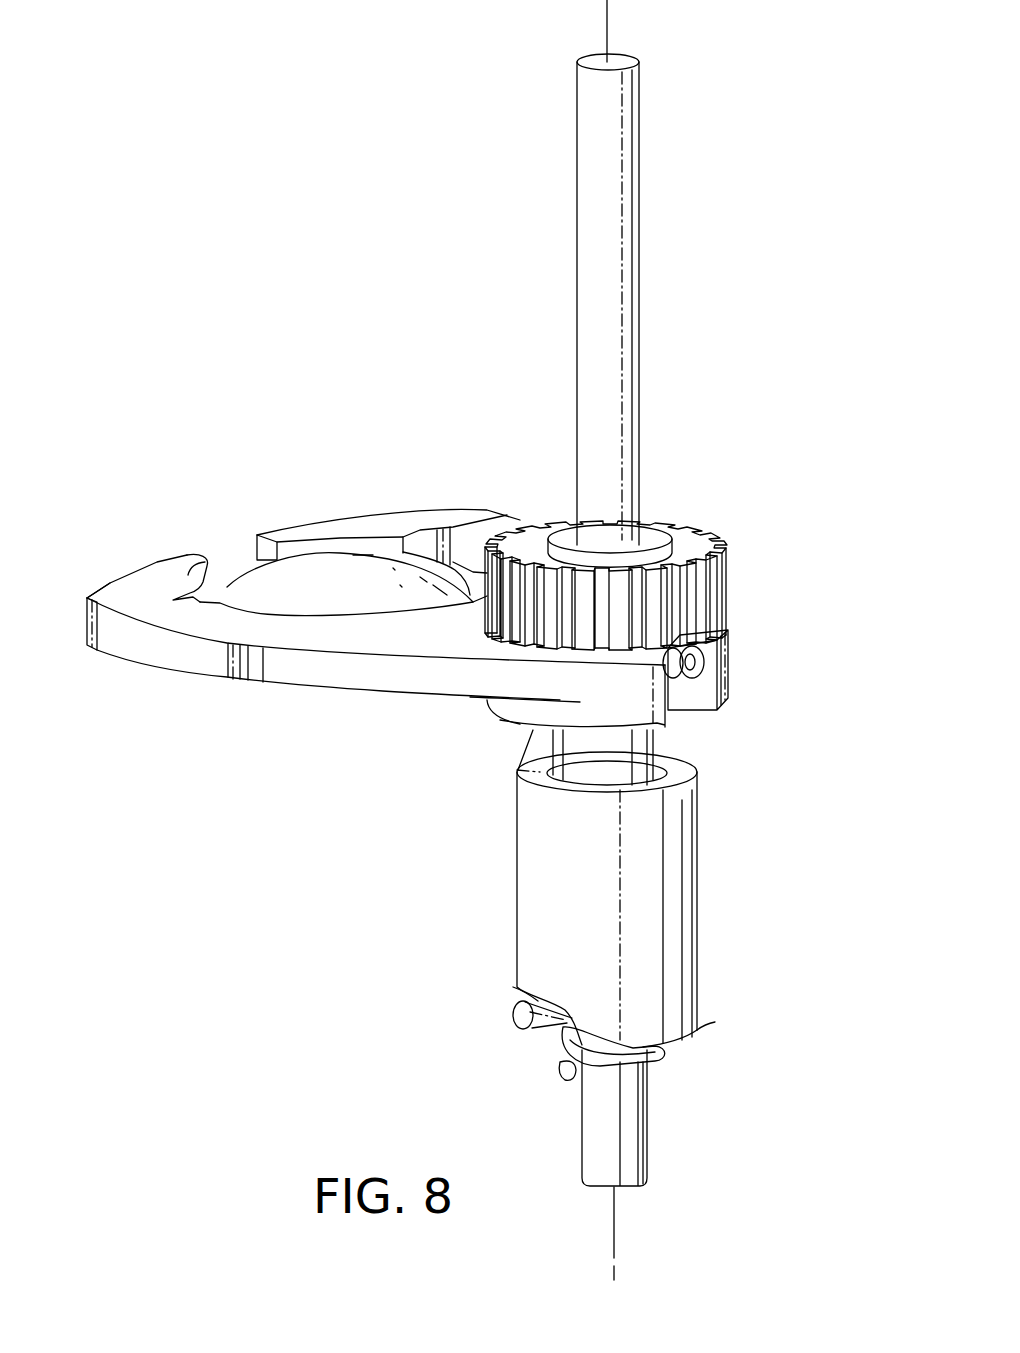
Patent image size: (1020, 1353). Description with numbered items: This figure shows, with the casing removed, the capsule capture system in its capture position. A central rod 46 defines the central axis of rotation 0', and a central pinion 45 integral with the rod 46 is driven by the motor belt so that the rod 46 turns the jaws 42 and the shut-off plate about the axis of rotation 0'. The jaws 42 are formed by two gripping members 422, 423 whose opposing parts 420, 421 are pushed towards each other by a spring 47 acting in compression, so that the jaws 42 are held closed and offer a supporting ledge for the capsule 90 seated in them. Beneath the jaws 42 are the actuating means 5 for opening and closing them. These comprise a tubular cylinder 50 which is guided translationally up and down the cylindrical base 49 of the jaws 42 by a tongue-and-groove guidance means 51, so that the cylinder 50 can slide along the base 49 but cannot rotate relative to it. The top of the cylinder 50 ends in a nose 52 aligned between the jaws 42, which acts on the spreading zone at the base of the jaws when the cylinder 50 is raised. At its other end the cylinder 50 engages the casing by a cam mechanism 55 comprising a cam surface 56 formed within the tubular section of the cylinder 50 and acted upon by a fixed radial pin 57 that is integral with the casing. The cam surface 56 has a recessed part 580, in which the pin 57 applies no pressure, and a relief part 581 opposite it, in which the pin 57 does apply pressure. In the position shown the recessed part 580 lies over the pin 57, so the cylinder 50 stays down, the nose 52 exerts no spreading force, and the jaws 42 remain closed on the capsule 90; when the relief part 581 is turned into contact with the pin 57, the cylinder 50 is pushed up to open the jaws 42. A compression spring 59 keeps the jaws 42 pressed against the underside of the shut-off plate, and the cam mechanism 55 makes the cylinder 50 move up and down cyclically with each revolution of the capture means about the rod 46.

The central axis of rotation 0' is at (653, 640).
The central rod 46 is at (633, 330).
The central pinion 45 is at (702, 527).
The jaws 42 is at (443, 508).
The gripping member 422 is at (180, 657).
The gripping member 423 is at (502, 512).
The capsule 90 is at (300, 575).
The opposing part 420 is at (727, 660).
The spring 47 is at (705, 678).
The opposing part 421 is at (668, 713).
The actuating means 5 is at (492, 892).
The cylindrical base 49 is at (580, 767).
The nose 52 is at (537, 739).
The tongue-and-groove guidance means 51 is at (687, 803).
The cylinder 50 is at (673, 963).
The recessed part 580 is at (515, 990).
The radial pin 57 is at (520, 1014).
The cam mechanism 55 is at (533, 1040).
The cam surface 56 is at (680, 1043).
The relief part 581 is at (697, 1030).
The compression spring 59 is at (650, 1067).